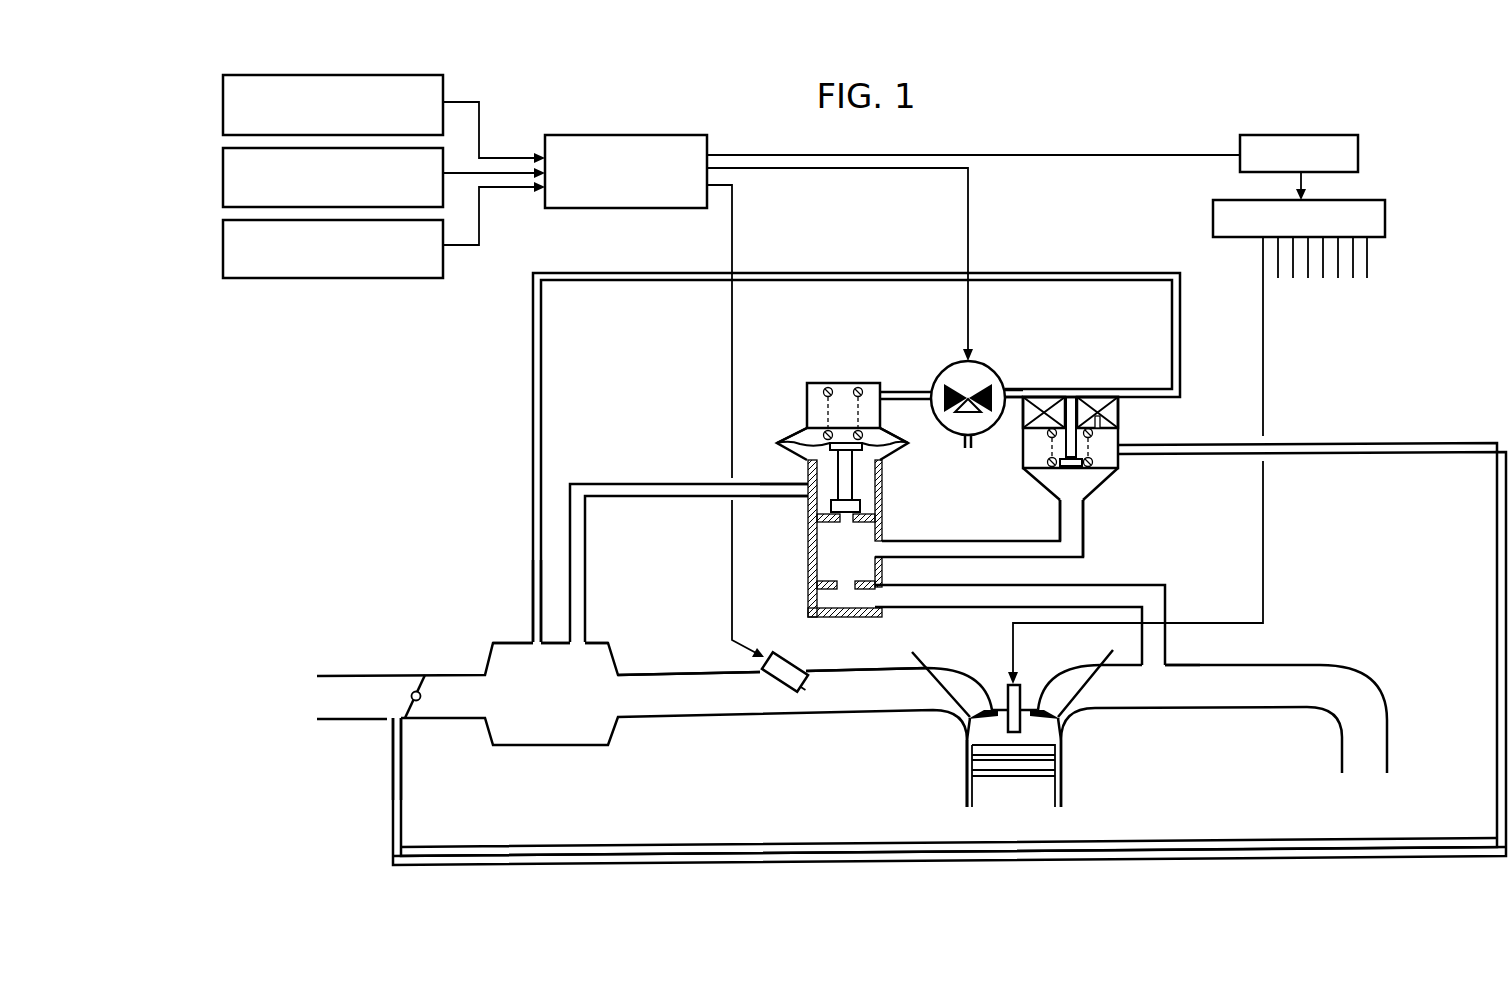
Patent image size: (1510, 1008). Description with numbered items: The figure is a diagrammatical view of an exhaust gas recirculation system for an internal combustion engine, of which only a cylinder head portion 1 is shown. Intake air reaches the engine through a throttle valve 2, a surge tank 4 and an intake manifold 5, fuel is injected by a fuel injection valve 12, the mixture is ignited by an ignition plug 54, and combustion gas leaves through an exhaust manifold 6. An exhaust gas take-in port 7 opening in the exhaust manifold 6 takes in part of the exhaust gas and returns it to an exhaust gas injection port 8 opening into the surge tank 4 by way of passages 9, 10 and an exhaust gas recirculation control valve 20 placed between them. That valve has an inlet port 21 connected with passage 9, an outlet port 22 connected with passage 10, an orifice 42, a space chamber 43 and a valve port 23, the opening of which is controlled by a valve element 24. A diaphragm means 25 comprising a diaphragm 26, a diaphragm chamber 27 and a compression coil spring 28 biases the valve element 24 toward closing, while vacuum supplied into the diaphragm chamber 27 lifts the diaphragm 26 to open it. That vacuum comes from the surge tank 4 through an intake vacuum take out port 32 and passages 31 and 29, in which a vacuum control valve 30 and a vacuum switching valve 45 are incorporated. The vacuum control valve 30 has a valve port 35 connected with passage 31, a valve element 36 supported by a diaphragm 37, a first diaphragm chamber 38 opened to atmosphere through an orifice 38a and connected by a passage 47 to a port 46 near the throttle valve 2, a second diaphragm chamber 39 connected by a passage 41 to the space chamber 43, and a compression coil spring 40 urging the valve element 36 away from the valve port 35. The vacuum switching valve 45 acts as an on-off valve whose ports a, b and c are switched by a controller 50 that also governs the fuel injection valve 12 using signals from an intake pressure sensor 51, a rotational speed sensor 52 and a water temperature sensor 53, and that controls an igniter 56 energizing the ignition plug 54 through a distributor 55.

The cylinder head portion 1 is at (1070, 757).
The throttle valve 2 is at (416, 677).
The surge tank 4 is at (596, 748).
The intake manifold 5 is at (681, 662).
The exhaust manifold 6 is at (1283, 670).
The exhaust gas take-in port 7 is at (1153, 667).
The exhaust gas injection port 8 is at (581, 650).
The passage 9 is at (1150, 593).
The passage 10 is at (583, 583).
The fuel injection valve 12 is at (787, 656).
The exhaust gas recirculation control valve 20 is at (884, 508).
The inlet port 21 is at (876, 597).
The outlet port 22 is at (807, 490).
The valve port 23 is at (842, 523).
The valve element 24 is at (856, 502).
The diaphragm means 25 is at (848, 385).
The diaphragm 26 is at (882, 430).
The diaphragm chamber 27 is at (806, 425).
The compression coil spring 28 is at (866, 388).
The passage 29 is at (918, 380).
The vacuum control valve 30 is at (1120, 428).
The passage 31 is at (833, 275).
The intake vacuum take out port 32 is at (531, 648).
The valve port 35 is at (1096, 397).
The valve element 36 is at (1080, 484).
The diaphragm 37 is at (1098, 478).
The first diaphragm chamber 38 is at (1033, 456).
The orifice 38a is at (1134, 415).
The second diaphragm chamber 39 is at (1068, 493).
The compression coil spring 40 is at (1051, 397).
The passage 41 is at (978, 550).
The orifice 42 is at (838, 608).
The space chamber 43 is at (851, 568).
The vacuum switching valve 45 is at (980, 362).
The port 46 is at (395, 716).
The passage 47 is at (522, 855).
The controller 50 is at (614, 150).
The intake pressure sensor 51 is at (224, 118).
The rotational speed sensor 52 is at (224, 189).
The water temperature sensor 53 is at (224, 262).
The ignition plug 54 is at (1020, 682).
The distributor 55 is at (1215, 216).
The igniter 56 is at (1256, 142).